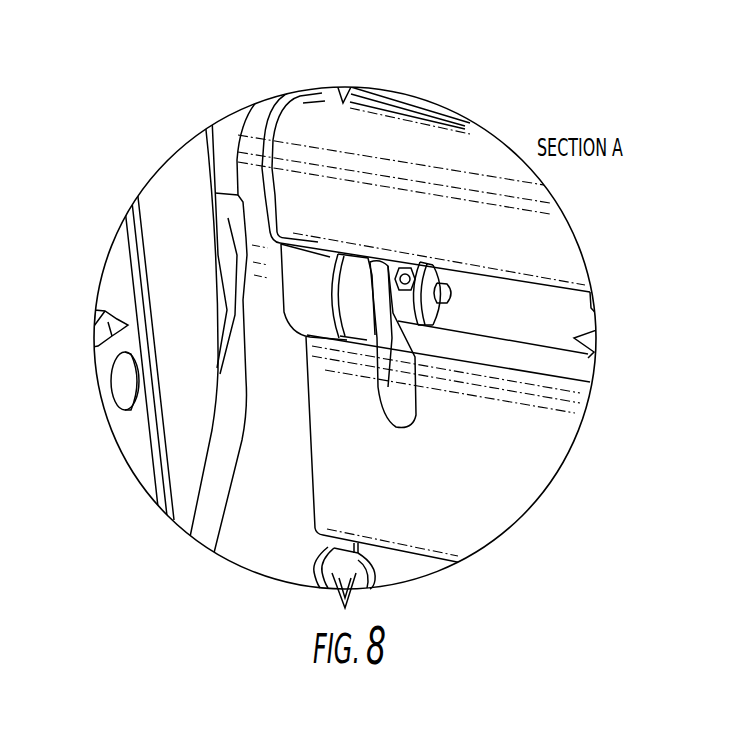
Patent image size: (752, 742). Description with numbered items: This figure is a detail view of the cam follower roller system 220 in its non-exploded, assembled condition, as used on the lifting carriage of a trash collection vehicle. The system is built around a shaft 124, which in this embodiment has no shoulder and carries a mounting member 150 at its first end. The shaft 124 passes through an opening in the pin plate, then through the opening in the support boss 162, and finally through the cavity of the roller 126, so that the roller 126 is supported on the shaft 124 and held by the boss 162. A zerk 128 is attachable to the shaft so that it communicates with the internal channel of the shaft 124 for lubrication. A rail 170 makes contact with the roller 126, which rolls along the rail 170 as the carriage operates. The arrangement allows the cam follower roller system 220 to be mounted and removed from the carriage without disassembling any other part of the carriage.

The cam follower roller system 220 is at (183, 120).
The rail 170 is at (173, 212).
The roller 126 is at (227, 213).
The shaft 124 is at (358, 272).
The zerk 128 is at (453, 293).
The support boss 162 is at (305, 310).
The mounting member 150 is at (400, 303).